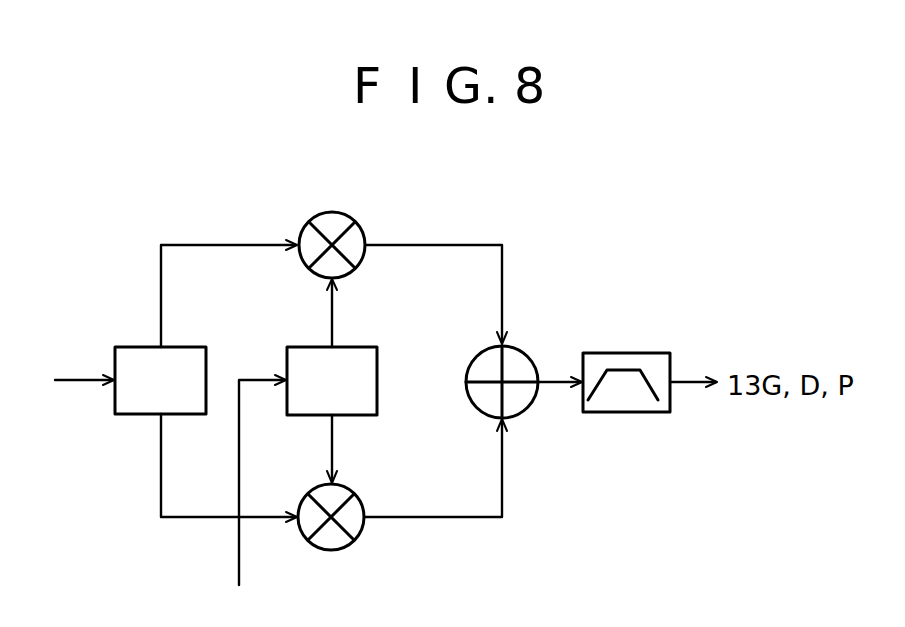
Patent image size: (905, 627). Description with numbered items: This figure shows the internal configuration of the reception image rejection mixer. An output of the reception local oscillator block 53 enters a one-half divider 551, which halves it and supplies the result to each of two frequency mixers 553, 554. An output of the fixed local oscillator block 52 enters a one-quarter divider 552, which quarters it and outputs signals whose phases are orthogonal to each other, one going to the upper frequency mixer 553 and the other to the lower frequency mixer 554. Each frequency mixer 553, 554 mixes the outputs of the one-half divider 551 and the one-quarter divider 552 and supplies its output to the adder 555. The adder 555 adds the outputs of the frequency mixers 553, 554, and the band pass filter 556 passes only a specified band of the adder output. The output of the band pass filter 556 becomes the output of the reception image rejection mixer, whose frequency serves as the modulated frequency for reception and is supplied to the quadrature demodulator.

The fixed local oscillator block 52 is at (255, 498).
The reception local oscillator block 53 is at (65, 382).
The ½ divider 551 is at (128, 346).
The ¼ divider 552 is at (368, 346).
The frequency mixer 553 is at (352, 219).
The frequency mixer 554 is at (352, 544).
The adder 555 is at (527, 347).
The band pass filter 556 is at (656, 352).